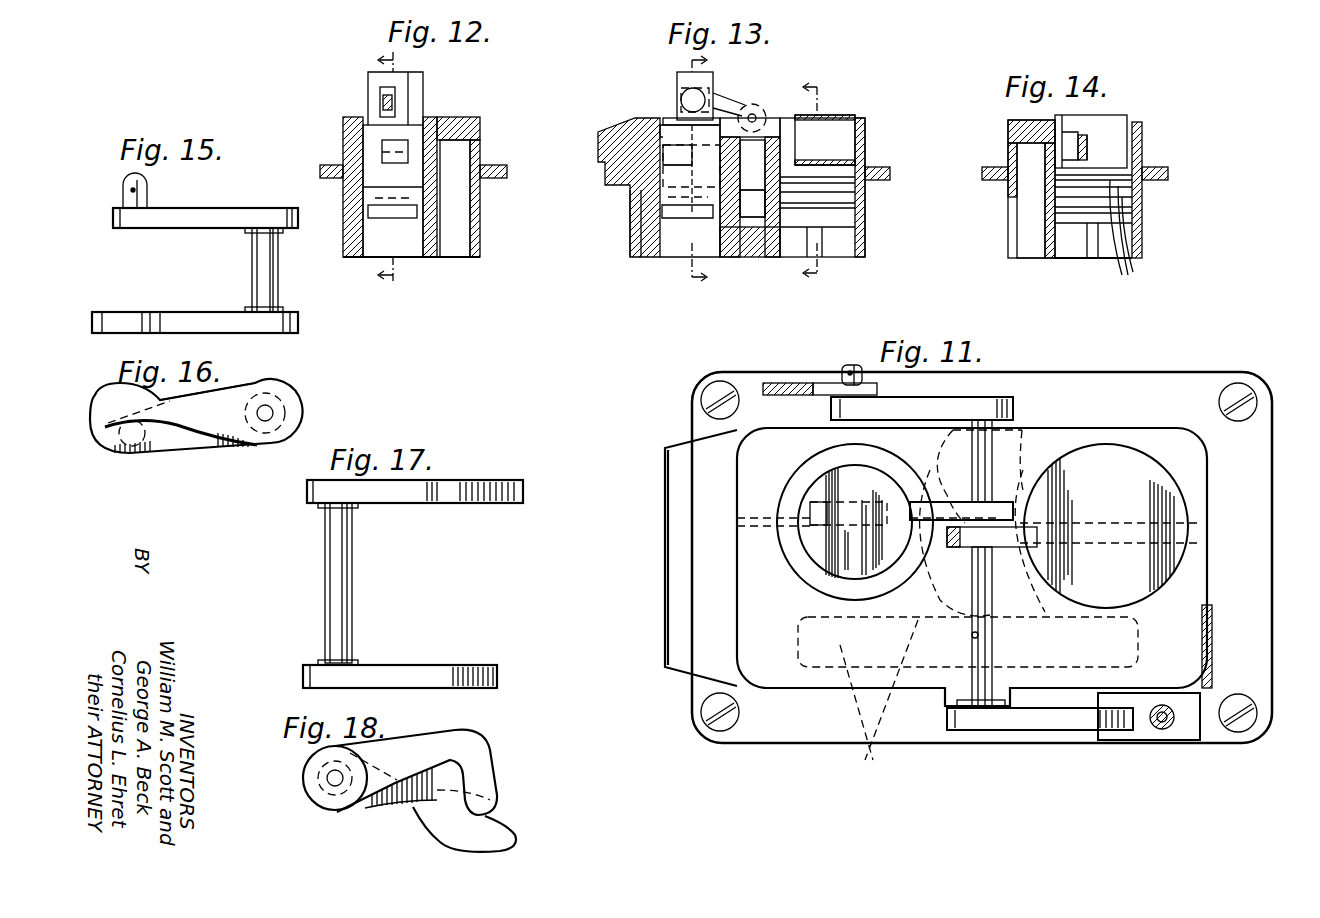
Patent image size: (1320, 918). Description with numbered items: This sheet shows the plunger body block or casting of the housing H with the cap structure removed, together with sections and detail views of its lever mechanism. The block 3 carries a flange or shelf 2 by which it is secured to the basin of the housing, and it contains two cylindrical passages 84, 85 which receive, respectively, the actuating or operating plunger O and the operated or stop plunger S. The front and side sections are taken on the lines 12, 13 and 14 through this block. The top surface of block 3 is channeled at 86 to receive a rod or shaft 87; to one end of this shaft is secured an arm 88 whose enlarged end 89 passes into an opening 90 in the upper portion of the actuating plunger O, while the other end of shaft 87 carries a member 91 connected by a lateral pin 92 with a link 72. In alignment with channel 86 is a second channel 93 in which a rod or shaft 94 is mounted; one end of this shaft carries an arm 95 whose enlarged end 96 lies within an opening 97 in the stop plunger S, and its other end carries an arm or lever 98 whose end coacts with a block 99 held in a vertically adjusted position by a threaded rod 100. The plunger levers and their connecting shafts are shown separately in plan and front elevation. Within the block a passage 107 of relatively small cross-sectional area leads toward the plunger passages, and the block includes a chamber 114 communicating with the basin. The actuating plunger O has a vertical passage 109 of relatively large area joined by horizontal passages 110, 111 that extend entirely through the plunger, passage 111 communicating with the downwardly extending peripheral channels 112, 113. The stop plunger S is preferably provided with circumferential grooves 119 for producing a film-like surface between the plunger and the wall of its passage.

In FIG. 12, the flange or shelf 2 is at (322, 170).
In FIG. 13, the flange or shelf 2 is at (888, 176).
In FIG. 14, the flange or shelf 2 is at (995, 172).
In FIG. 11, the flange or shelf 2 is at (1254, 443).
In FIG. 12, the block 3 is at (471, 129).
In FIG. 13, the block 3 is at (600, 152).
In FIG. 14, the block 3 is at (1140, 202).
In FIG. 11, the block 3 is at (1180, 626).
In FIG. 11, the housing H is at (1282, 498).
In FIG. 12, the actuating plunger O is at (415, 135).
In FIG. 13, the actuating plunger O is at (672, 172).
In FIG. 11, the actuating plunger O is at (810, 543).
In FIG. 13, the stop plunger S is at (858, 170).
In FIG. 14, the stop plunger S is at (1122, 175).
In FIG. 11, the stop plunger S is at (1147, 569).
In FIG. 13, the section line 12— 12 is at (712, 170).
In FIG. 12, the section line 13— 13 is at (368, 171).
In FIG. 13, the section line 14— 14 is at (795, 178).
In FIG. 11, the link 72 is at (825, 395).
In FIG. 13, the cylindrical passage 84 is at (668, 240).
In FIG. 13, the cylindrical passage 85 is at (848, 252).
In FIG. 11, the groove or channel 86 is at (970, 438).
In FIG. 15, the rod or shaft 87 is at (266, 272).
In FIG. 16, the rod or shaft 87 is at (274, 413).
In FIG. 11, the rod or shaft 87 is at (980, 467).
In FIG. 15, the arm 88 is at (245, 327).
In FIG. 16, the arm 88 is at (237, 450).
In FIG. 11, the arm 88 is at (913, 556).
In FIG. 12, the enlarged end 89 is at (380, 96).
In FIG. 13, the enlarged end 89 is at (678, 100).
In FIG. 16, the enlarged end 89 is at (103, 437).
In FIG. 12, the opening 90 is at (381, 104).
In FIG. 13, the opening 90 is at (714, 96).
In FIG. 15, the member 91 is at (222, 217).
In FIG. 16, the member 91 is at (186, 445).
In FIG. 11, the member 91 is at (966, 397).
In FIG. 15, the lateral pin 92 is at (146, 192).
In FIG. 16, the lateral pin 92 is at (147, 450).
In FIG. 11, the lateral pin 92 is at (846, 368).
In FIG. 11, the second groove or channel 93 is at (972, 637).
In FIG. 17, the rod or shaft 94 is at (340, 565).
In FIG. 18, the rod or shaft 94 is at (333, 779).
In FIG. 11, the rod or shaft 94 is at (984, 591).
In FIG. 17, the arm 95 is at (384, 497).
In FIG. 18, the arm 95 is at (398, 802).
In FIG. 11, the arm 95 is at (1030, 528).
In FIG. 14, the enlarged end 96 is at (1083, 130).
In FIG. 18, the enlarged end 96 is at (500, 830).
In FIG. 13, the opening 97 is at (843, 142).
In FIG. 14, the opening 97 is at (1065, 143).
In FIG. 17, the arm or lever 98 is at (415, 676).
In FIG. 18, the arm or lever 98 is at (437, 741).
In FIG. 11, the arm or lever 98 is at (994, 732).
In FIG. 11, the block 99 is at (1180, 740).
In FIG. 11, the threaded rod 100 is at (1160, 730).
In FIG. 13, the passage 107 is at (640, 243).
In FIG. 13, the passage 109 is at (668, 212).
In FIG. 13, the passage 110 is at (698, 169).
In FIG. 13, the passage 111 is at (672, 143).
In FIG. 13, the passage or channel 112 is at (750, 187).
In FIG. 13, the passage or channel 113 is at (665, 150).
In FIG. 12, the chamber 114 is at (455, 172).
In FIG. 13, the chamber 114 is at (752, 212).
In FIG. 14, the chamber 114 is at (1028, 158).
In FIG. 11, the chamber 114 is at (968, 700).
In FIG. 13, the circumferential grooves or channels 119 is at (848, 194).
In FIG. 14, the circumferential grooves or channels 119 is at (1104, 237).